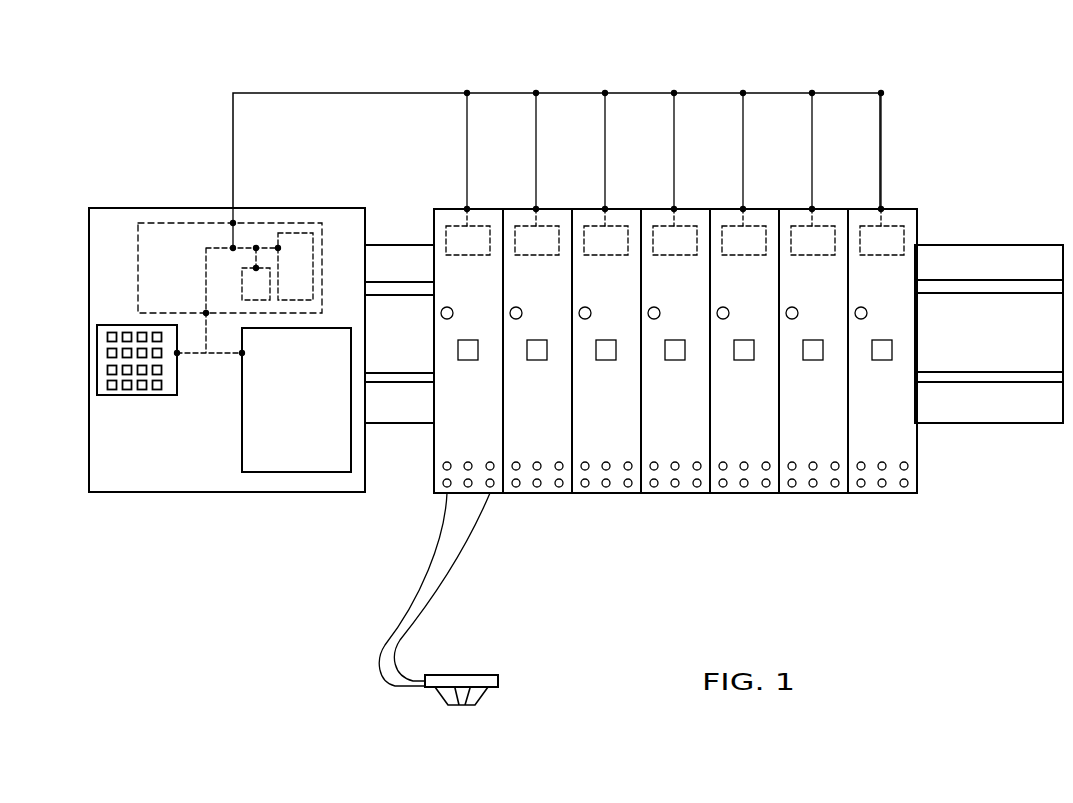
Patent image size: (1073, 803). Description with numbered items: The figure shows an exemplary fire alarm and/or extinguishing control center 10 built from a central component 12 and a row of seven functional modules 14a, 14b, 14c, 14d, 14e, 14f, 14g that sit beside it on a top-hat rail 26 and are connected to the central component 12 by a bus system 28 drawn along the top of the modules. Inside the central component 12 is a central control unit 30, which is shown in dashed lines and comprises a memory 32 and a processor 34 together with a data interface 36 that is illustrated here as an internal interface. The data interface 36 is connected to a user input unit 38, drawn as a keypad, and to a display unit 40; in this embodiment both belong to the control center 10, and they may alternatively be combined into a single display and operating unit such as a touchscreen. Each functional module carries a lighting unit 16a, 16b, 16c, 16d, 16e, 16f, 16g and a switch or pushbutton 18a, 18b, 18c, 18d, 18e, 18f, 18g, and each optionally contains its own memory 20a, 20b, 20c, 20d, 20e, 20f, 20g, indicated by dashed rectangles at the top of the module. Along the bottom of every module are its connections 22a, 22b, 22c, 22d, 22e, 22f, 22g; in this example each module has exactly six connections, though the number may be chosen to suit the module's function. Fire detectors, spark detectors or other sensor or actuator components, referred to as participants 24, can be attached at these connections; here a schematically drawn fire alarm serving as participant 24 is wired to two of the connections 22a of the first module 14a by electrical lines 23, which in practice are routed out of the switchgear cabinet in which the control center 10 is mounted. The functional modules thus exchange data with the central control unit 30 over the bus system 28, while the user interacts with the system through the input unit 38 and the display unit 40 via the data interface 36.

The fire alarm and/or extinguishing control center 10 is at (1003, 163).
The central component 12 is at (140, 207).
The functional module 14a is at (440, 208).
The functional module 14b is at (509, 208).
The functional module 14c is at (578, 208).
The functional module 14d is at (647, 208).
The functional module 14e is at (716, 208).
The functional module 14f is at (785, 208).
The functional module 14g is at (854, 208).
The lighting unit 16a is at (453, 313).
The lighting unit 16b is at (522, 313).
The lighting unit 16c is at (591, 313).
The lighting unit 16d is at (660, 313).
The lighting unit 16e is at (729, 313).
The lighting unit 16f is at (798, 313).
The lighting unit 16g is at (867, 313).
The switch or pushbutton 18a is at (468, 360).
The switch or pushbutton 18b is at (537, 360).
The switch or pushbutton 18c is at (606, 360).
The switch or pushbutton 18d is at (675, 360).
The switch or pushbutton 18e is at (744, 360).
The switch or pushbutton 18f is at (813, 360).
The switch or pushbutton 18g is at (882, 360).
The memory of the functional module 20a is at (481, 256).
The memory of the functional module 20b is at (550, 256).
The memory of the functional module 20c is at (619, 256).
The memory of the functional module 20d is at (688, 256).
The memory of the functional module 20e is at (757, 256).
The memory of the functional module 20f is at (826, 256).
The memory of the functional module 20g is at (895, 256).
The connections of the functional module 22a is at (500, 495).
The connections of the functional module 22b is at (569, 495).
The connections of the functional module 22c is at (638, 495).
The connections of the functional module 22d is at (707, 495).
The connections of the functional module 22e is at (776, 495).
The connections of the functional module 22f is at (845, 495).
The connections of the functional module 22g is at (914, 495).
The electrical lines 23 is at (430, 587).
The participants 24 is at (473, 674).
The top-hat rail 26 is at (975, 244).
The bus system 28 is at (713, 92).
The central control unit 30 is at (278, 222).
The memory of the central control unit 32 is at (311, 232).
The processor of the central control unit 34 is at (245, 267).
The data interface 36 is at (206, 313).
The user input unit 38 is at (131, 396).
The display unit 40 is at (281, 473).